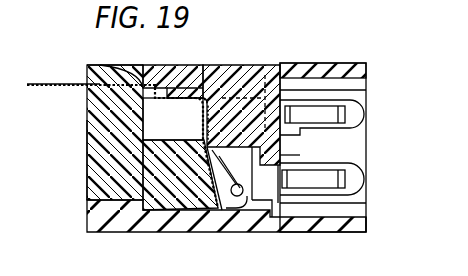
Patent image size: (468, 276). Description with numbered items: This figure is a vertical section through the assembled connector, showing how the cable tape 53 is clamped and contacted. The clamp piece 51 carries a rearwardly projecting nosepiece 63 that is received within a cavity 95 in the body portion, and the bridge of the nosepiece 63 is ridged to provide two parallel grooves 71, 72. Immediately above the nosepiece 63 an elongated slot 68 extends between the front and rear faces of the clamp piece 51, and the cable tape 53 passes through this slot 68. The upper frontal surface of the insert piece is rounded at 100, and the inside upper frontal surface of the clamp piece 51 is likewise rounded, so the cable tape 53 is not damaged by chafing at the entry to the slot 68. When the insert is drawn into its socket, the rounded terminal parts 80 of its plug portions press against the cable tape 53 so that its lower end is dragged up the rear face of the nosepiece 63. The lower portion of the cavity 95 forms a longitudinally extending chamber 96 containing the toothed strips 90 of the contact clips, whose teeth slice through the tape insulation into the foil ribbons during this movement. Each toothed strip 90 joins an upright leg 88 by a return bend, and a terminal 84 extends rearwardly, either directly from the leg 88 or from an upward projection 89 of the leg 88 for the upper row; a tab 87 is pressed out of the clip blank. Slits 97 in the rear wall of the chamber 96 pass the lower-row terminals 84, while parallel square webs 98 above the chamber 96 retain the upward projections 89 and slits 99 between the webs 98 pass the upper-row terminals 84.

The clamp piece 51 is at (112, 223).
The cable tape 53 is at (65, 84).
The nosepiece 63 is at (184, 205).
The elongated slot 68 is at (125, 84).
The groove 71 is at (166, 72).
The groove 72 is at (173, 119).
The terminal parts of the plug portions 80 is at (143, 160).
The terminal 84 is at (364, 155).
The tab 87 is at (298, 155).
The upright leg 88 is at (278, 203).
The upward projection 89 is at (364, 230).
The toothed strip 90 is at (242, 214).
The cavity 95 is at (210, 65).
The chamber 96 is at (213, 213).
The slits 97 is at (264, 208).
The webs 98 is at (226, 100).
The slits 99 is at (256, 98).
The rounded upper frontal surface 100 is at (90, 97).